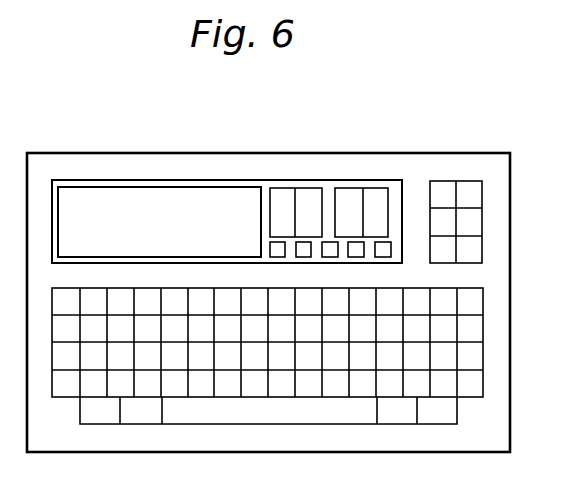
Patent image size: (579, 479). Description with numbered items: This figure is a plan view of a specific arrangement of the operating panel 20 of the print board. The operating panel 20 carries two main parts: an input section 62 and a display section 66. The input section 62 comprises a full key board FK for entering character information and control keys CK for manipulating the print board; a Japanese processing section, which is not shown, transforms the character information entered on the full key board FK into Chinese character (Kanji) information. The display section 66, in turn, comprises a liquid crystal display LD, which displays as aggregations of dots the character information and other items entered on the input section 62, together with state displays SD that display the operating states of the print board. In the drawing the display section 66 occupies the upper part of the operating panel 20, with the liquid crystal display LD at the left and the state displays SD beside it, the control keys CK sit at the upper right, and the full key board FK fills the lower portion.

The operating panel 20 is at (511, 189).
The input section 62 is at (488, 268).
The display section 66 is at (108, 180).
The liquid crystal display LD is at (174, 194).
The state displays SD is at (401, 169).
The control keys CK is at (470, 182).
The full key board FK is at (484, 330).